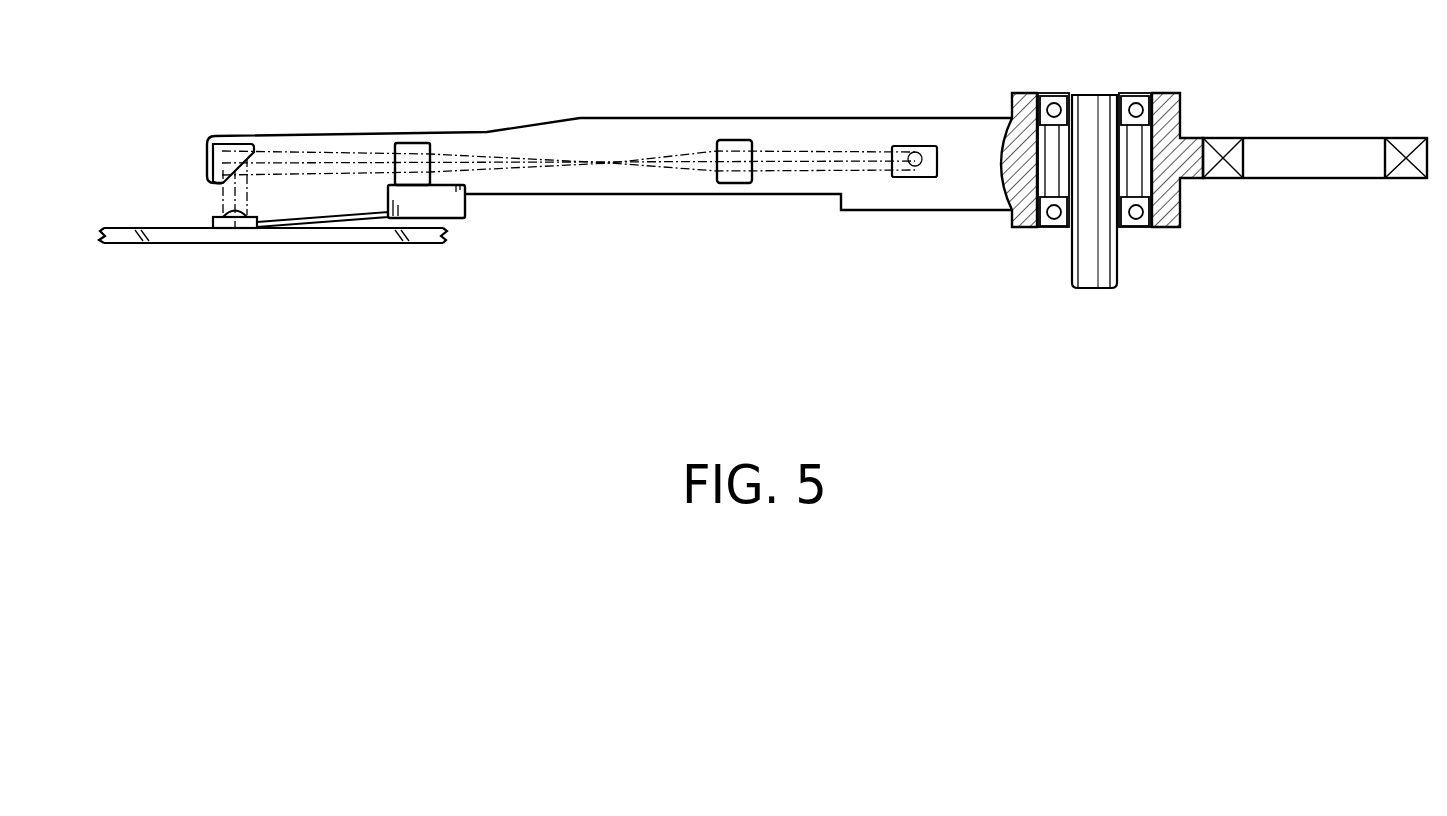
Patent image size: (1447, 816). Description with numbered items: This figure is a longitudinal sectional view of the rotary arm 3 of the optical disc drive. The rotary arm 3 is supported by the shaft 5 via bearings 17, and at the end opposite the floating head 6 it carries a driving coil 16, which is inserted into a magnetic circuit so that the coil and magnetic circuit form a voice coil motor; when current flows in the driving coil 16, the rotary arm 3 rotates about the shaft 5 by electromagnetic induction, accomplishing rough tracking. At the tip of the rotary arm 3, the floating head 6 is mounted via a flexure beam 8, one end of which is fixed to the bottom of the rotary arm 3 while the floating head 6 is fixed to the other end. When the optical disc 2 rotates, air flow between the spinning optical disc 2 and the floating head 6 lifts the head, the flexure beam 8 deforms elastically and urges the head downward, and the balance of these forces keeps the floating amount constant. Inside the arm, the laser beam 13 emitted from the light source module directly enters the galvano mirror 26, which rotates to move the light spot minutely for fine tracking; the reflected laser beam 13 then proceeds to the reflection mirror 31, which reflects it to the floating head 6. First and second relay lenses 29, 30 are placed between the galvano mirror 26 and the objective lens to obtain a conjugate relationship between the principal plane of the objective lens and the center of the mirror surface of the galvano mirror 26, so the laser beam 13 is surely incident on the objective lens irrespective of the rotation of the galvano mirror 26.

The optical disc 2 is at (193, 233).
The rotary arm 3 is at (636, 84).
The shaft 5 is at (1098, 94).
The floating head 6 is at (180, 211).
The flexure beam 8 is at (322, 232).
The laser beam 13 is at (328, 130).
The driving coil 16 is at (1232, 137).
The bearings 17 is at (1052, 94).
The galvano mirror 26 is at (912, 148).
The first relay lens 29 is at (730, 180).
The second relay lens 30 is at (414, 143).
The reflection mirror 31 is at (228, 152).